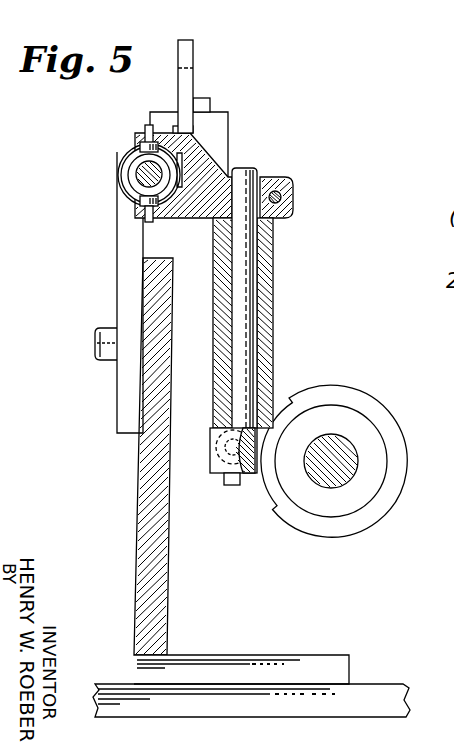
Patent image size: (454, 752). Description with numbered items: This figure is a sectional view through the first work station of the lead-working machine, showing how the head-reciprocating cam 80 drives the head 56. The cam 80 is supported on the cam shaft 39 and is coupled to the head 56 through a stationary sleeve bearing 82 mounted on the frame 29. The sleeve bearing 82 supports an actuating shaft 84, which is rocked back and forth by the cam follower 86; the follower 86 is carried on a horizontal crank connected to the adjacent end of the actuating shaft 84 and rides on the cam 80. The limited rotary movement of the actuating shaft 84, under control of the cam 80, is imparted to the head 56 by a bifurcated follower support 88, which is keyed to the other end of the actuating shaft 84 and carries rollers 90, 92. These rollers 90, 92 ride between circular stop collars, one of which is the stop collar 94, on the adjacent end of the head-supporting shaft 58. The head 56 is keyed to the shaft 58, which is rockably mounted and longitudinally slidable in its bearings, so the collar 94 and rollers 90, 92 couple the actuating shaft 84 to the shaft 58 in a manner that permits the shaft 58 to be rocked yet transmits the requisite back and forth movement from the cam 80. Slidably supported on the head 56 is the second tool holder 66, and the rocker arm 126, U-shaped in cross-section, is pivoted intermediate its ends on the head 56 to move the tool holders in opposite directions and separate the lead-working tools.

The frame 29 is at (144, 556).
The cam shaft 39 is at (347, 452).
The head 56 is at (229, 118).
The shaft 58 is at (136, 174).
The second tool holder 66 is at (191, 51).
The head-reciprocating cam 80 is at (392, 495).
The stationary sleeve bearing 82 is at (266, 326).
The actuating shaft 84 is at (252, 293).
The cam follower 86 is at (222, 478).
The bifurcated follower support 88 is at (199, 221).
The roller 90 is at (139, 146).
The roller 92 is at (137, 201).
The circular stop collar 94 is at (127, 184).
The rocker arm 126 is at (204, 98).